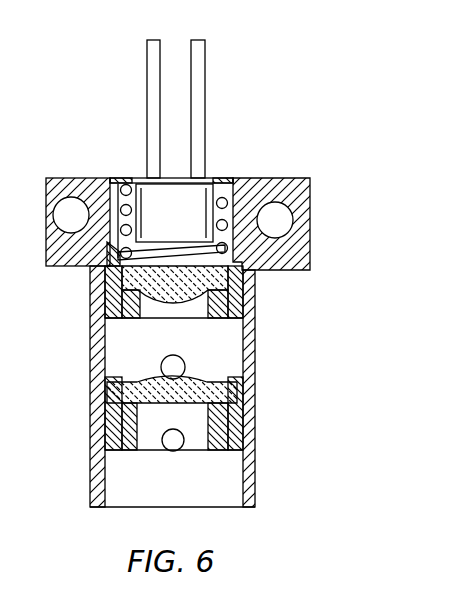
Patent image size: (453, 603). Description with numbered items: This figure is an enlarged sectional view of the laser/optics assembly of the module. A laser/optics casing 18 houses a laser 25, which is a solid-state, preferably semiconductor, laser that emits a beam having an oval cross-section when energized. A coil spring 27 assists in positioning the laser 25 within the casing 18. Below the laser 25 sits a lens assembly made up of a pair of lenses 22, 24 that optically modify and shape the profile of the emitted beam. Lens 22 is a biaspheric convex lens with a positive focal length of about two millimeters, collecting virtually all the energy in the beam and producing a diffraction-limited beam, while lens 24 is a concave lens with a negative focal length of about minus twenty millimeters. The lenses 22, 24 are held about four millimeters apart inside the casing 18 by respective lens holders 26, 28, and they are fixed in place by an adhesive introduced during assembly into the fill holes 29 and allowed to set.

The laser/optics casing 18 is at (300, 190).
The biaspheric convex lens 22 is at (240, 272).
The concave lens 24 is at (240, 388).
The laser 25 is at (187, 193).
The lens holder 26 is at (115, 312).
The coil spring 27 is at (105, 178).
The lens holder 28 is at (113, 428).
The fill holes 29 is at (92, 268).